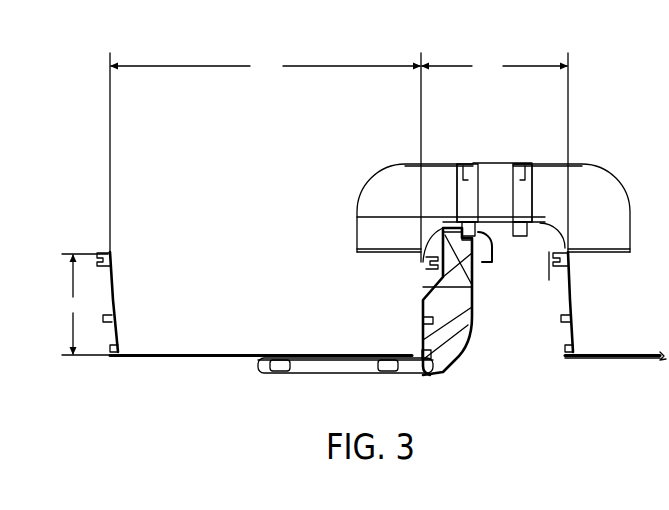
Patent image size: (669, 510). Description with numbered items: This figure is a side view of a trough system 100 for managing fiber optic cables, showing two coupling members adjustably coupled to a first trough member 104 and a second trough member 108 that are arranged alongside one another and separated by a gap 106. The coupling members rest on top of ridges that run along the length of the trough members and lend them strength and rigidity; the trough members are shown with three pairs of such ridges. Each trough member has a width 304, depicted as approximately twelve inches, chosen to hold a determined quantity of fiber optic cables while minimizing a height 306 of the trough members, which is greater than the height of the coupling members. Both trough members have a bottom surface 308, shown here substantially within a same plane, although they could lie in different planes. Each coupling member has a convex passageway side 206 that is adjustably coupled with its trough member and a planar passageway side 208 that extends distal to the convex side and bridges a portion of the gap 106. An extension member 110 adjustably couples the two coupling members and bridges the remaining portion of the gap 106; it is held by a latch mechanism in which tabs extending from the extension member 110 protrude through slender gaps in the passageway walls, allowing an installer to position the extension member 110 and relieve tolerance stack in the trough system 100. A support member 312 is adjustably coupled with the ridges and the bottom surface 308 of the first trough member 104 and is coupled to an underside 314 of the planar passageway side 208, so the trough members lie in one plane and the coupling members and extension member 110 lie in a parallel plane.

The trough system 100 is at (87, 53).
The first trough member 104 is at (140, 361).
The gap 106 is at (494, 66).
The second trough member 108 is at (600, 361).
The extension member 110 is at (493, 158).
The convex passageway side 206 is at (423, 162).
The planar passageway side 208 is at (464, 162).
The width 304 is at (265, 66).
The height 306 is at (86, 304).
The bottom surface 308 is at (186, 360).
The support member 312 is at (476, 292).
The underside 314 is at (443, 224).